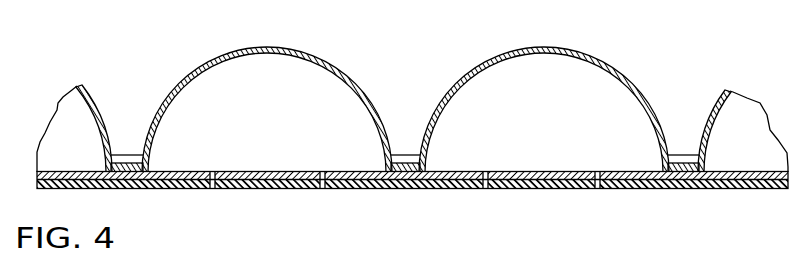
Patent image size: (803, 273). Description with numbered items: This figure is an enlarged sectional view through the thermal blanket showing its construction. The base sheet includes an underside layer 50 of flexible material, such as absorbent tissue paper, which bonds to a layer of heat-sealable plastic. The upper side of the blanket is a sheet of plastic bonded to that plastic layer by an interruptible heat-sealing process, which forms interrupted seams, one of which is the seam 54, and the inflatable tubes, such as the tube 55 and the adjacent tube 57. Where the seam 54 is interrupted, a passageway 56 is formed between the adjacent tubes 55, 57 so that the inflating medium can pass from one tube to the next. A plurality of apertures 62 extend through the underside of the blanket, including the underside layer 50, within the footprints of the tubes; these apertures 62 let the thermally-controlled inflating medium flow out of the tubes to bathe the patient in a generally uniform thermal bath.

The underside layer 50 is at (412, 182).
The interrupted seam 54 is at (267, 171).
The inflatable tube 55 is at (717, 92).
The passageway 56 is at (407, 155).
The inflatable tube 57 is at (508, 47).
The apertures 62 is at (486, 189).